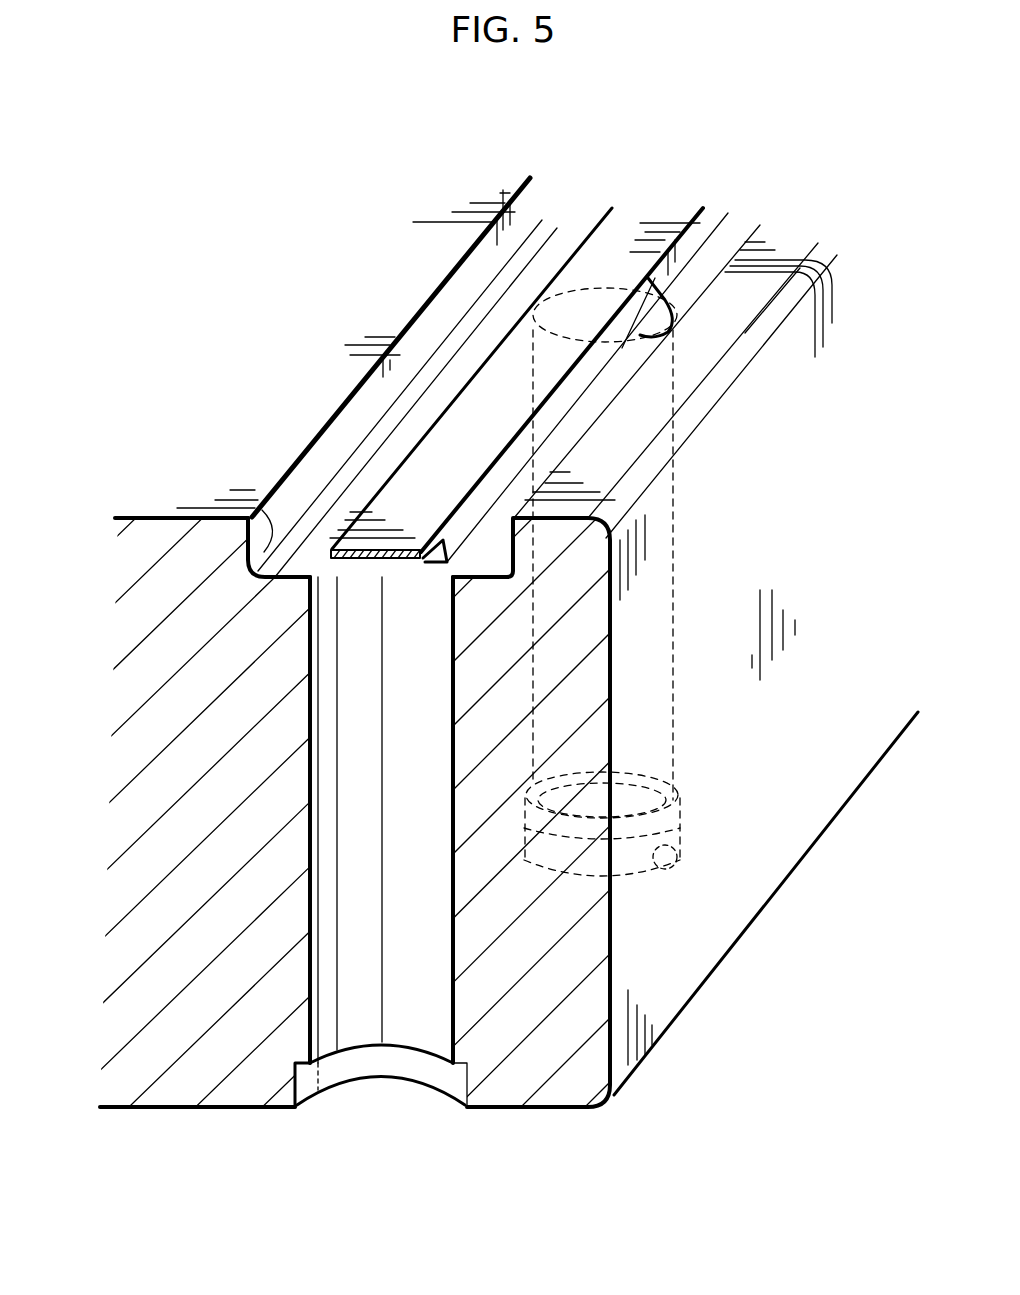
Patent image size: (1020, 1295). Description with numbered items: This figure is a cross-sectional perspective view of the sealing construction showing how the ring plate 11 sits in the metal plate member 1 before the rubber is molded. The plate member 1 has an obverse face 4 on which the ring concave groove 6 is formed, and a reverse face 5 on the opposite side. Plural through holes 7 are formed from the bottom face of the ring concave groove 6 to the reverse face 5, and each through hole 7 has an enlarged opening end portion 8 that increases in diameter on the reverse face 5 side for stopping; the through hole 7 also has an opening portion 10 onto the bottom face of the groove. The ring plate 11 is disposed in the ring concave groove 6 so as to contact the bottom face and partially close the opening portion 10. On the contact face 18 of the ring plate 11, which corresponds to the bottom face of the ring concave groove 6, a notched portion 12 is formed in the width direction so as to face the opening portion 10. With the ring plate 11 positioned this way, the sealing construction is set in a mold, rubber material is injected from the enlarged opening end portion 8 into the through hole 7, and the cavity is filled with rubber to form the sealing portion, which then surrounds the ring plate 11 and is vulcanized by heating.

The plate member 1 is at (672, 1030).
The obverse face 4 is at (148, 517).
The reverse face 5 is at (182, 1110).
The ring concave groove 6 is at (253, 493).
The through hole 7 is at (348, 868).
The enlarged opening end portion 8 is at (371, 1066).
The opening portion 10 is at (465, 560).
The ring plate 11 is at (427, 458).
The notched portion 12 is at (323, 549).
The contact face 18 is at (566, 408).